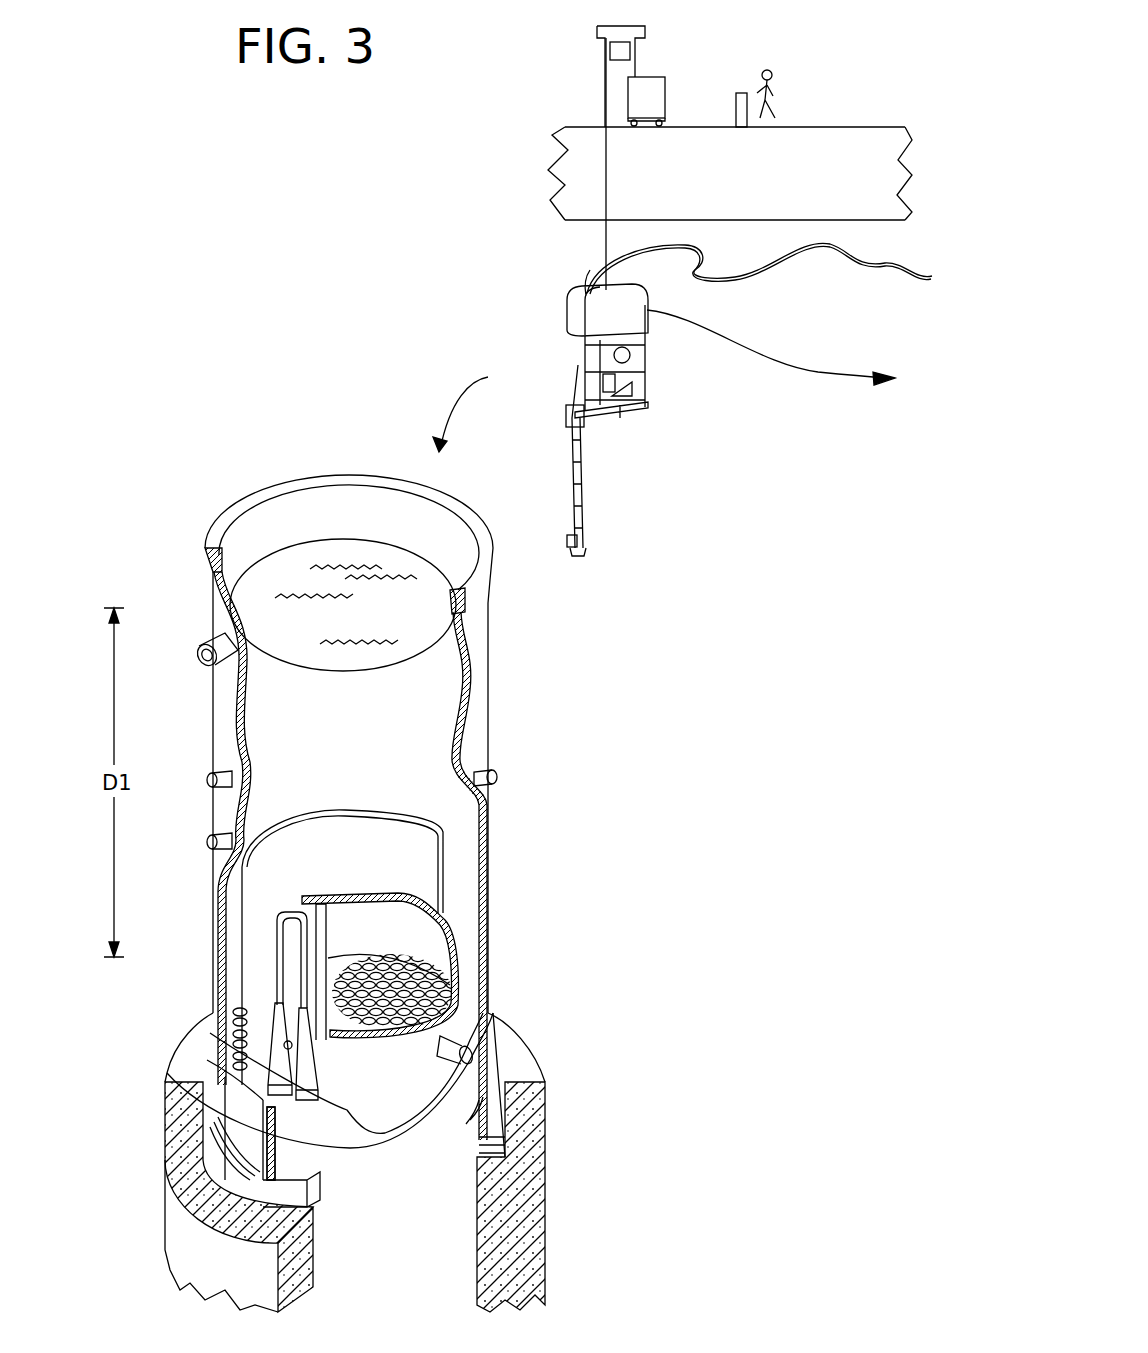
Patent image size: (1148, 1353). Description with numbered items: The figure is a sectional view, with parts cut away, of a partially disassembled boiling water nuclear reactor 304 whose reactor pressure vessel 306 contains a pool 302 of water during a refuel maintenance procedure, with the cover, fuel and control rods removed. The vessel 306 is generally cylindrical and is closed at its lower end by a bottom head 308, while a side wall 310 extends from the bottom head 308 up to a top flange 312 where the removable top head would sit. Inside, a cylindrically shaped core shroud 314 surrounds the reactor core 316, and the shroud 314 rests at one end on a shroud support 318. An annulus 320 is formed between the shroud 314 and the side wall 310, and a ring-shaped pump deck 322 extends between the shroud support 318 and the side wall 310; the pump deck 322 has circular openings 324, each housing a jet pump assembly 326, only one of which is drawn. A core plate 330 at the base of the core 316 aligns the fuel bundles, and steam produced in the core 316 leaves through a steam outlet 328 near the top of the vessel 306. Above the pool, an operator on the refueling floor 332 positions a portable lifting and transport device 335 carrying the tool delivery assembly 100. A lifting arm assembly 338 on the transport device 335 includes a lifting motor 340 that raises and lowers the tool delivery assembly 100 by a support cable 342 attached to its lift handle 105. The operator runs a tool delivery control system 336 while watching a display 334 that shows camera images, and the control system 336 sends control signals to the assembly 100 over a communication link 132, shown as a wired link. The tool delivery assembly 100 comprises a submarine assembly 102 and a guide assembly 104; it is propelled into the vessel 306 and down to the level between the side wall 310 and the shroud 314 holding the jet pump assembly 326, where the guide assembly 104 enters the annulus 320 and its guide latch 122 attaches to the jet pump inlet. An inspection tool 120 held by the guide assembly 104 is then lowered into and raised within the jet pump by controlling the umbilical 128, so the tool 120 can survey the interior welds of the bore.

The tool delivery assembly 100 is at (648, 353).
The submarine assembly 102 is at (627, 418).
The guide assembly 104 is at (586, 500).
The lift handle 105 is at (642, 290).
The inspection tool 120 is at (570, 540).
The guide latch 122 is at (585, 548).
The umbilical 128 is at (722, 285).
The communication link 132 is at (823, 370).
The pool 302 is at (348, 558).
The reactor 304 is at (481, 405).
The reactor pressure vessel 306 is at (226, 512).
The bottom head 308 is at (425, 1125).
The side wall 310 is at (478, 735).
The top flange 312 is at (485, 588).
The core shroud 314 is at (342, 812).
The reactor core 316 is at (410, 935).
The shroud support 318 is at (257, 1035).
The annulus 320 is at (236, 937).
The pump deck 322 is at (230, 1040).
The circular openings 324 is at (230, 1062).
The jet pump assembly 326 is at (273, 943).
The steam outlet 328 is at (199, 662).
The core plate 330 is at (445, 990).
The refueling floor 332 is at (830, 127).
The display 334 is at (740, 100).
The portable lifting and transport device 335 is at (653, 75).
The tool delivery control system 336 is at (737, 113).
The lifting arm assembly 338 is at (618, 27).
The lifting motor 340 is at (612, 53).
The support cable 342 is at (604, 106).